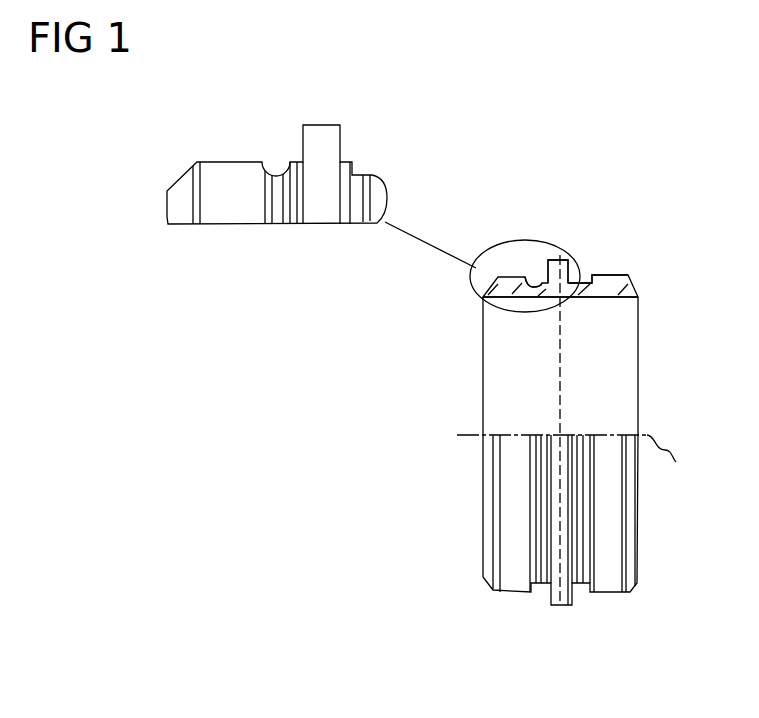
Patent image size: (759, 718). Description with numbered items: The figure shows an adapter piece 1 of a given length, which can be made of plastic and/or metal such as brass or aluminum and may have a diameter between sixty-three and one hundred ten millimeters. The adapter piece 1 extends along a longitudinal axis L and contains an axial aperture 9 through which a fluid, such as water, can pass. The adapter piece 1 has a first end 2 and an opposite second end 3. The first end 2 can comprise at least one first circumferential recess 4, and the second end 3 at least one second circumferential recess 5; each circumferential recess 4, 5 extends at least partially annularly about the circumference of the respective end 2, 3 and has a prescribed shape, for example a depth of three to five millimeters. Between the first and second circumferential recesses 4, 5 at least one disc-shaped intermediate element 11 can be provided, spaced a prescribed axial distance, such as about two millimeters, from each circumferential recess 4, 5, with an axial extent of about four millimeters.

The adapter piece 1 is at (611, 224).
The first end 2 is at (210, 136).
The second end 3 is at (640, 612).
The first circumferential recess 4 is at (541, 280).
The second circumferential recess 5 is at (587, 278).
The axial aperture 9 is at (673, 354).
The disc-shaped intermediate element 11 is at (553, 262).